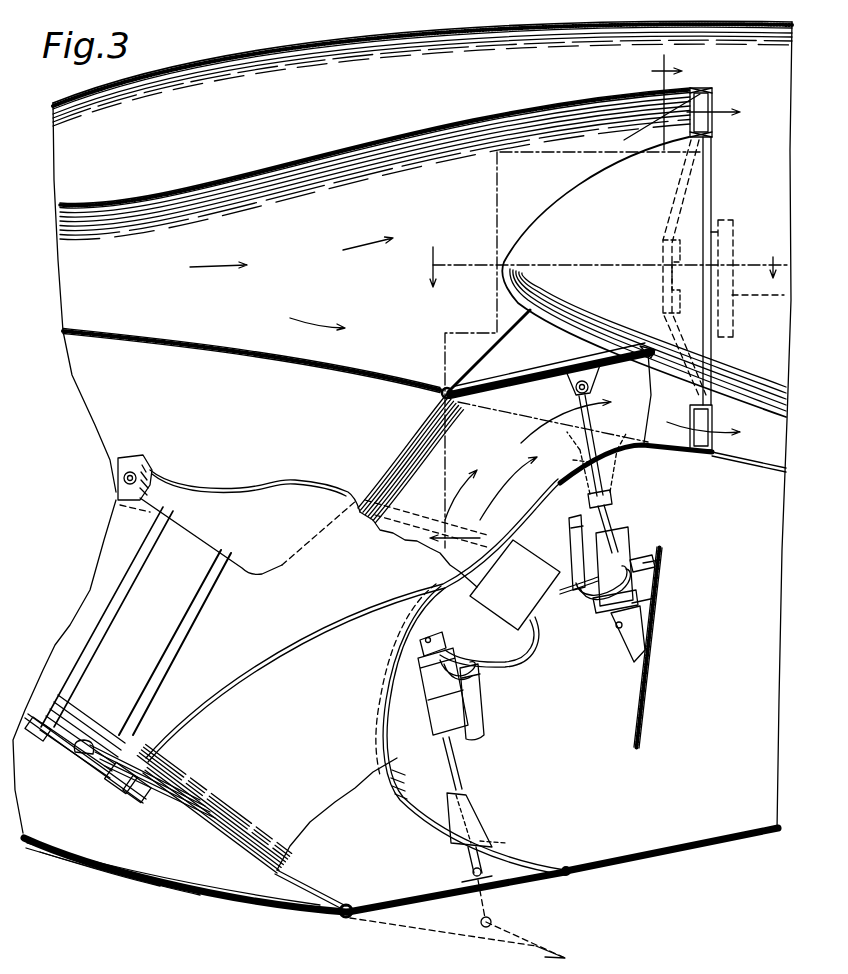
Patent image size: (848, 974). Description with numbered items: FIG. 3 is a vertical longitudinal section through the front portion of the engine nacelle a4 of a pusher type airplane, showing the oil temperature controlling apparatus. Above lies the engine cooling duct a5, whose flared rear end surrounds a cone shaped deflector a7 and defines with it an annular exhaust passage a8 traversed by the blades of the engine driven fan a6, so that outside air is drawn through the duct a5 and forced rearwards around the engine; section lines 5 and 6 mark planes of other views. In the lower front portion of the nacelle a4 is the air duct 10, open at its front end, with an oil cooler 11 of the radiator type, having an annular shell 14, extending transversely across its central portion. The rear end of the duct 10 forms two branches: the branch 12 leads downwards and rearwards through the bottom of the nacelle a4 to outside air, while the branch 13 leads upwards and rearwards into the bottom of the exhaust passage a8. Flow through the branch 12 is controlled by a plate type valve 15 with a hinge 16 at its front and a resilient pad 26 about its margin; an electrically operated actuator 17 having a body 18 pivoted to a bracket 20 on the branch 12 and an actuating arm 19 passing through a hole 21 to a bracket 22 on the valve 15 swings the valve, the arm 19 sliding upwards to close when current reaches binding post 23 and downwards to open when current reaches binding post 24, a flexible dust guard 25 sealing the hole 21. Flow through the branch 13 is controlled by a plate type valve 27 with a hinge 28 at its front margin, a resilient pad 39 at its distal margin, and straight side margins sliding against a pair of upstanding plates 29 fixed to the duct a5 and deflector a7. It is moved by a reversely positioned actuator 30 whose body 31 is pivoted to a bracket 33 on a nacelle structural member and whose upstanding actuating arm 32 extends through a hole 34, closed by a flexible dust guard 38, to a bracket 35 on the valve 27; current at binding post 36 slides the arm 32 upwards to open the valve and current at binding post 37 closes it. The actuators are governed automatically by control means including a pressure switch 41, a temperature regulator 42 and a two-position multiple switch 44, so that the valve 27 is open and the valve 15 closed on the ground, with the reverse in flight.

The nacelle a4 is at (286, 52).
The duct a5 is at (126, 204).
The fan a6 is at (703, 107).
The cone shaped deflector a7 is at (566, 200).
The annular exhaust passage a8 is at (690, 106).
The section line 5- 5 is at (565, 303).
The section line 6- 6 is at (600, 263).
The air duct 10 is at (117, 557).
The oil cooler 11 is at (196, 534).
The discharge branch 12 is at (222, 806).
The branch 13 is at (337, 540).
The annular shell 14 is at (135, 642).
The plate type valve 15 is at (440, 920).
The hinge 16 is at (348, 918).
The electrically operated actuator 17 is at (492, 711).
The body 18 is at (462, 690).
The actuating arm 19 is at (462, 767).
The bracket 20 is at (428, 655).
The hole 21 is at (508, 843).
The bracket 22 is at (468, 873).
The binding post 23 is at (466, 702).
The binding post 24 is at (428, 694).
The flexible dust guard 25 is at (493, 824).
The resilient pad 26 is at (568, 875).
The plate type valve 27 is at (524, 378).
The hinge 28 is at (442, 386).
The upstanding plates 29 is at (470, 367).
The electrically operated actuator 30 is at (635, 546).
The body 31 is at (604, 606).
The actuating arm 32 is at (607, 522).
The bracket 33 is at (644, 624).
The hole 34 is at (566, 459).
The bracket 35 is at (566, 394).
The binding post 36 is at (640, 566).
The binding post 37 is at (598, 578).
The flexible dust guard 38 is at (590, 492).
The resilient pad 39 is at (630, 345).
The pressure switch 41 is at (137, 472).
The temperature regulator 42 is at (90, 779).
The 2-position multiple switch 44 is at (515, 585).